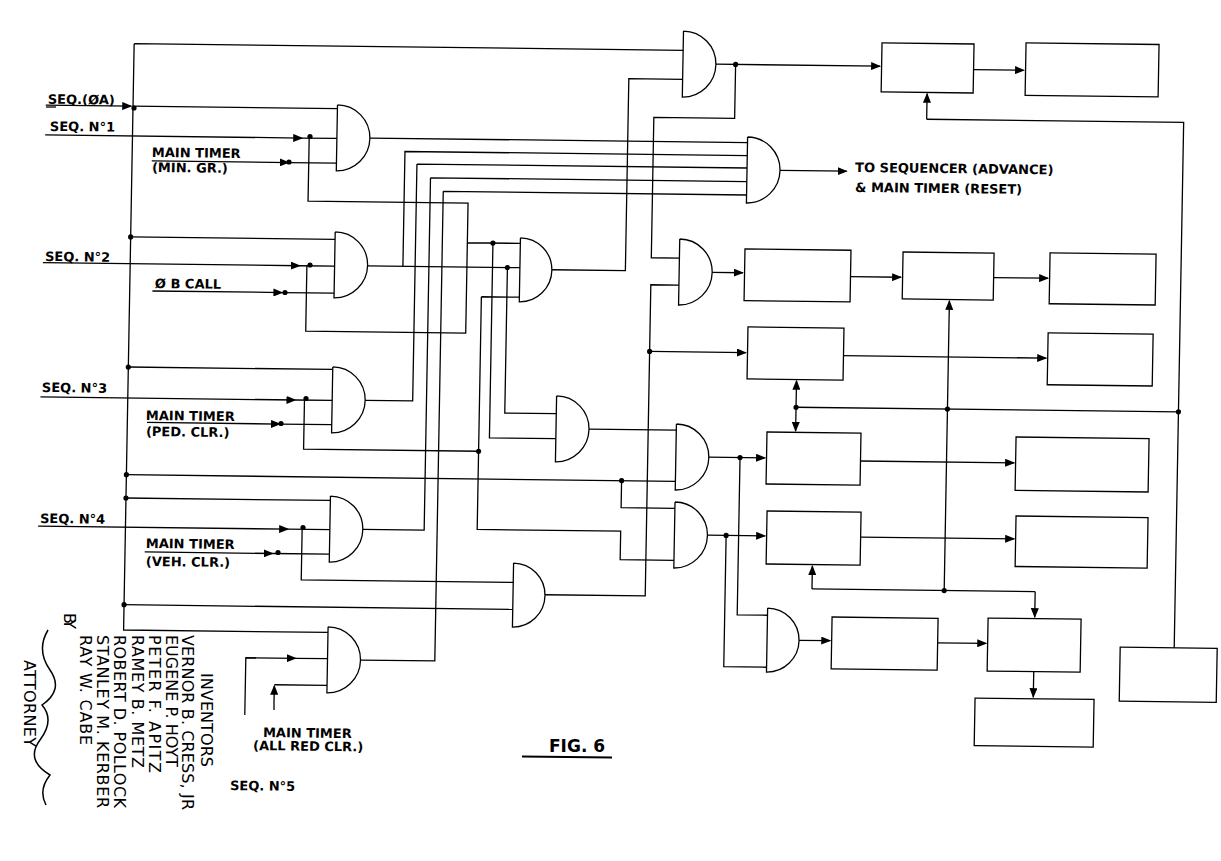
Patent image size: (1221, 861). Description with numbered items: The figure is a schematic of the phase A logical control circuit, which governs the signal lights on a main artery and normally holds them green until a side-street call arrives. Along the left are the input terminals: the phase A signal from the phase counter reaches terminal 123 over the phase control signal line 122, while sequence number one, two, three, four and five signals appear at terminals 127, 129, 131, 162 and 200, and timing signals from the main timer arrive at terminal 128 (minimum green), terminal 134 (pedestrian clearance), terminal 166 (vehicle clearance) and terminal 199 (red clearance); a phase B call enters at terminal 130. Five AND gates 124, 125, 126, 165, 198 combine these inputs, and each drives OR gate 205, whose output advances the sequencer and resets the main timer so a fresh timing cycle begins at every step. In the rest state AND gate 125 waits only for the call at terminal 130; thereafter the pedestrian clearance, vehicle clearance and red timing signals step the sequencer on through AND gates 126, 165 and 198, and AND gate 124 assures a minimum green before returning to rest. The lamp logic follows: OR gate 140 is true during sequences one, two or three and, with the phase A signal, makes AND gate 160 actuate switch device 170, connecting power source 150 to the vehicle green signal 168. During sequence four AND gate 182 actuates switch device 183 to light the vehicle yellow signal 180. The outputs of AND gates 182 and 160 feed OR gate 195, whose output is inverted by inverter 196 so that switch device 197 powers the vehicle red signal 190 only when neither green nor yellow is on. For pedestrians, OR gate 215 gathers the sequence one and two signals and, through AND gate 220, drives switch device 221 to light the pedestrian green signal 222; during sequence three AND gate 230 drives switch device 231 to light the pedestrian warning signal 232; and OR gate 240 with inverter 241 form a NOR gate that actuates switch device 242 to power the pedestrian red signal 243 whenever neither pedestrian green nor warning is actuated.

The phase control signal line 122 is at (47, 106).
The phase A signal terminal 123 is at (135, 107).
The AND gate 124 is at (347, 117).
The AND gate 125 is at (352, 247).
The AND gate 126 is at (348, 379).
The sequence number 1 terminal 127 is at (307, 134).
The minimum green timing terminal 128 is at (283, 164).
The sequence number 2 terminal 129 is at (306, 265).
The phase B call terminal 130 is at (275, 294).
The sequence number 3 terminal 131 is at (303, 396).
The pedestrian clearance timing terminal 134 is at (275, 425).
The OR gate 140 is at (542, 253).
The power source 150 is at (1195, 692).
The AND gate 160 is at (702, 47).
The sequence number 4 terminal 162 is at (301, 527).
The AND gate 165 is at (347, 517).
The vehicle clearance timing terminal 166 is at (276, 558).
The vehicle green signal 168 is at (1142, 52).
The switch device 170 is at (952, 45).
The vehicle yellow signal 180 is at (1057, 333).
The AND gate 182 is at (532, 572).
The switch device 183 is at (830, 335).
The vehicle red signal 190 is at (1110, 257).
The OR gate 195 is at (690, 252).
The inverter 196 is at (818, 258).
The switch device 197 is at (958, 253).
The AND gate 198 is at (353, 640).
The red clearance timing terminal 199 is at (278, 690).
The sequence number 5 terminal 200 is at (297, 657).
The OR gate 205 is at (768, 148).
The OR gate 215 is at (560, 400).
The AND gate 220 is at (690, 432).
The switch device 221 is at (847, 443).
The pedestrian green signal 222 is at (1097, 443).
The AND gate 230 is at (683, 558).
The switch device 231 is at (843, 522).
The pedestrian warning signal 232 is at (1048, 520).
The OR gate 240 is at (783, 653).
The inverter 241 is at (913, 662).
The switch device 242 is at (1067, 630).
The pedestrian red signal 243 is at (1083, 725).